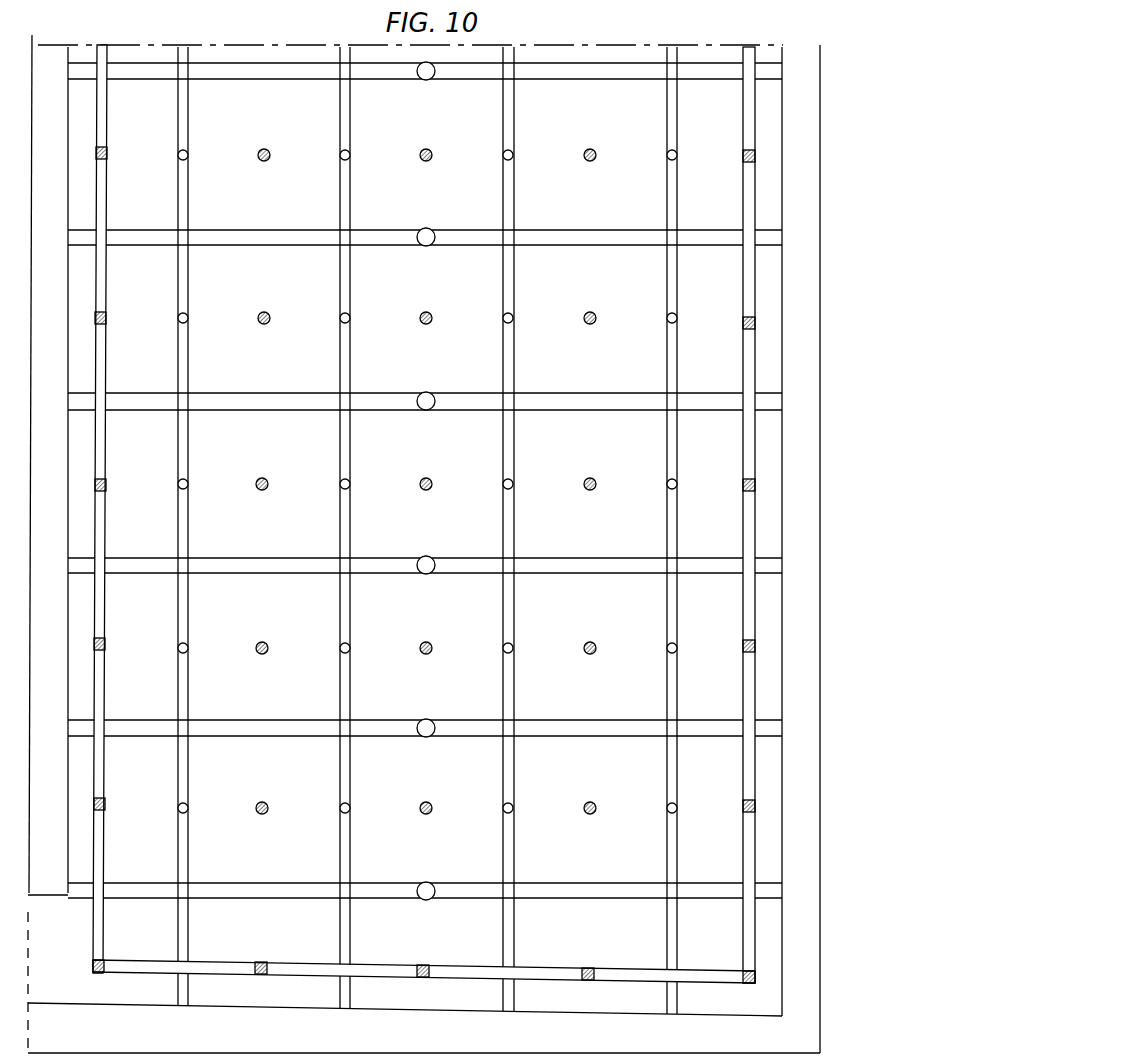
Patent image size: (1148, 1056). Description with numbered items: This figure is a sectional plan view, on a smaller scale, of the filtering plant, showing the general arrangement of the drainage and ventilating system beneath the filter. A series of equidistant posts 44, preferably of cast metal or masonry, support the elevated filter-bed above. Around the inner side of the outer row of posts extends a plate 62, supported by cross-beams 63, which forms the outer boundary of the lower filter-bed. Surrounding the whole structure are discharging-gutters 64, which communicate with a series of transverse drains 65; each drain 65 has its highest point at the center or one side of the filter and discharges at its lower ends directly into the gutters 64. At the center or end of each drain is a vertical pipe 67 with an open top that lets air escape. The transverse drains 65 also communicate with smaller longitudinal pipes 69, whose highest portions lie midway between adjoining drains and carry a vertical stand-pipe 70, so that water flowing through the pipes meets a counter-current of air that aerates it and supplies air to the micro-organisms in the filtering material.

The posts 44 is at (762, 643).
The plate 62 is at (108, 278).
The cross-beams 63 is at (99, 360).
The discharging-gutters 64 is at (424, 544).
The transverse drains 65 is at (425, 531).
The vertical pipe 67 is at (428, 492).
The longitudinal pipes 69 is at (188, 197).
The stand-pipe 70 is at (188, 155).